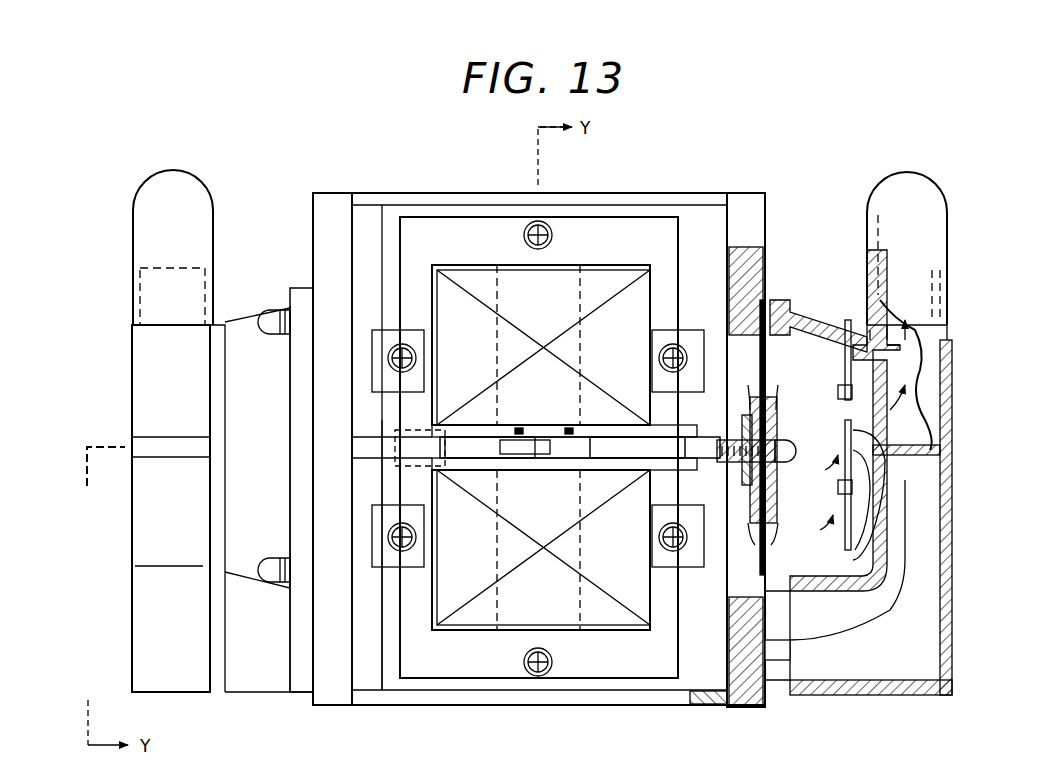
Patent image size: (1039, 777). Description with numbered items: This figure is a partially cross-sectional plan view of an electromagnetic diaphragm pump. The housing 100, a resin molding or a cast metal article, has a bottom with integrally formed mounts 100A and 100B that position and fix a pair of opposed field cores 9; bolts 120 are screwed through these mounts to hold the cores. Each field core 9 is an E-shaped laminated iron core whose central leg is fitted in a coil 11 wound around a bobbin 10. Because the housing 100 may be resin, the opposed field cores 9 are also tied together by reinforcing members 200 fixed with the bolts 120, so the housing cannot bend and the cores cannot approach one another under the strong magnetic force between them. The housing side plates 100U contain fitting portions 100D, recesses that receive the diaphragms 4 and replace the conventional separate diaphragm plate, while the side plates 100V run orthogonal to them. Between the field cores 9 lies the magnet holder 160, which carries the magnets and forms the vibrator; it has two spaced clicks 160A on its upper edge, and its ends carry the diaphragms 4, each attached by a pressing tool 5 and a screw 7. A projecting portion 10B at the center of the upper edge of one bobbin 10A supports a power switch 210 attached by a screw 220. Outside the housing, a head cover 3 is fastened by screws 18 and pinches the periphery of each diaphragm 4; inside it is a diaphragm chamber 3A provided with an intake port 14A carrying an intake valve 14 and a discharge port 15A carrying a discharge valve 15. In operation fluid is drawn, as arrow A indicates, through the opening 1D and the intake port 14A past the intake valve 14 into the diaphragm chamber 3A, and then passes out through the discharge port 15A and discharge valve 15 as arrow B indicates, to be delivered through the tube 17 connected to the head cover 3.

The opening 1D is at (800, 690).
The head cover 3 is at (250, 330).
The diaphragm chamber 3A is at (830, 335).
The diaphragm 4 is at (767, 350).
The pressing tool 5 is at (777, 395).
The screw 7 is at (785, 448).
The field core 9 is at (640, 270).
The bobbin 10 is at (450, 630).
The bobbin 10A is at (590, 300).
The projecting portion 10B is at (555, 425).
The coil 11 is at (640, 280).
The intake valve 14 is at (845, 520).
The intake port 14A is at (870, 520).
The discharge valve 15 is at (875, 365).
The discharge port 15A is at (920, 400).
The tube 17 is at (190, 185).
The screw 18 is at (272, 310).
The housing 100 is at (746, 190).
The mount 100A is at (372, 340).
The mount 100B is at (580, 210).
The fitting portion 100D is at (760, 300).
The side plate 100U is at (313, 222).
The side plate 100V is at (383, 193).
The bolt 120 is at (524, 237).
The magnet holder 160 is at (625, 458).
The click 160A is at (512, 468).
The reinforcing member 200 is at (382, 482).
The power switch 210 is at (520, 440).
The screw 220 is at (480, 437).
The arrow A is at (890, 610).
The arrow B is at (874, 425).